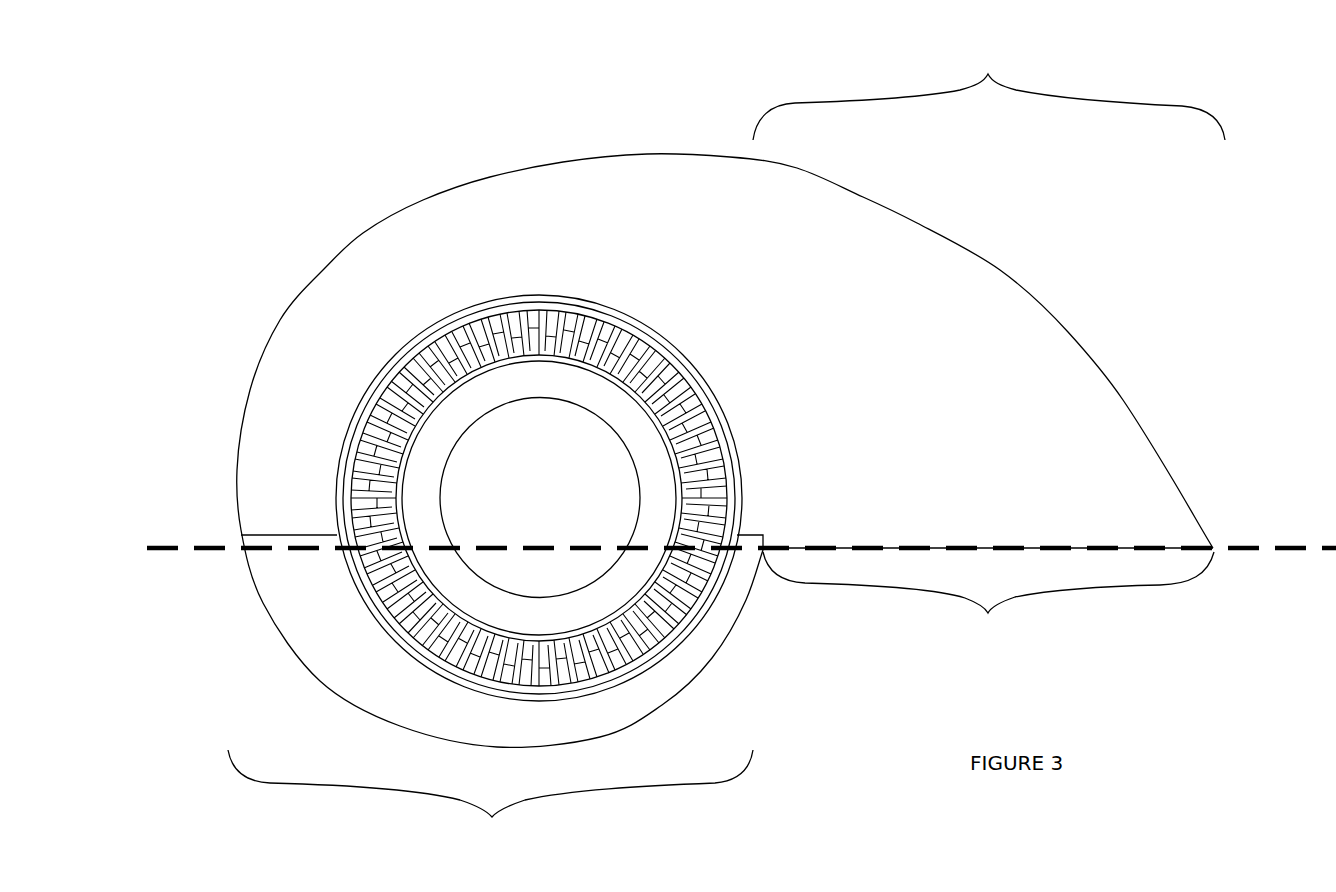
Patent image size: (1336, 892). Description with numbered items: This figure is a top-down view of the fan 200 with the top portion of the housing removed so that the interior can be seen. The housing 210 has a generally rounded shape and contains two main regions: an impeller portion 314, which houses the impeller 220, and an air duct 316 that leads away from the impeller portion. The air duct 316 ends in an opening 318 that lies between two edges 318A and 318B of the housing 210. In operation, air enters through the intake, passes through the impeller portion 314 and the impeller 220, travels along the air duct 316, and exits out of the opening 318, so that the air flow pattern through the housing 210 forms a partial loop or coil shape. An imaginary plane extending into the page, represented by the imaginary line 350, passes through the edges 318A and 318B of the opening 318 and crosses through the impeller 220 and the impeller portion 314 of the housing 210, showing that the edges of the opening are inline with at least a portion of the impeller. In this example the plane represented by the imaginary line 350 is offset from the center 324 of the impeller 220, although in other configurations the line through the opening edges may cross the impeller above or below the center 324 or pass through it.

The fan 200 is at (352, 170).
The housing 210 is at (300, 294).
The impeller 220 is at (363, 397).
The center of the impeller 324 is at (540, 498).
The imaginary line 350 is at (195, 553).
The impeller portion 314 is at (490, 801).
The air duct 316 is at (989, 90).
The opening 318 is at (988, 597).
The edge 318A is at (764, 550).
The edge 318B is at (1247, 548).